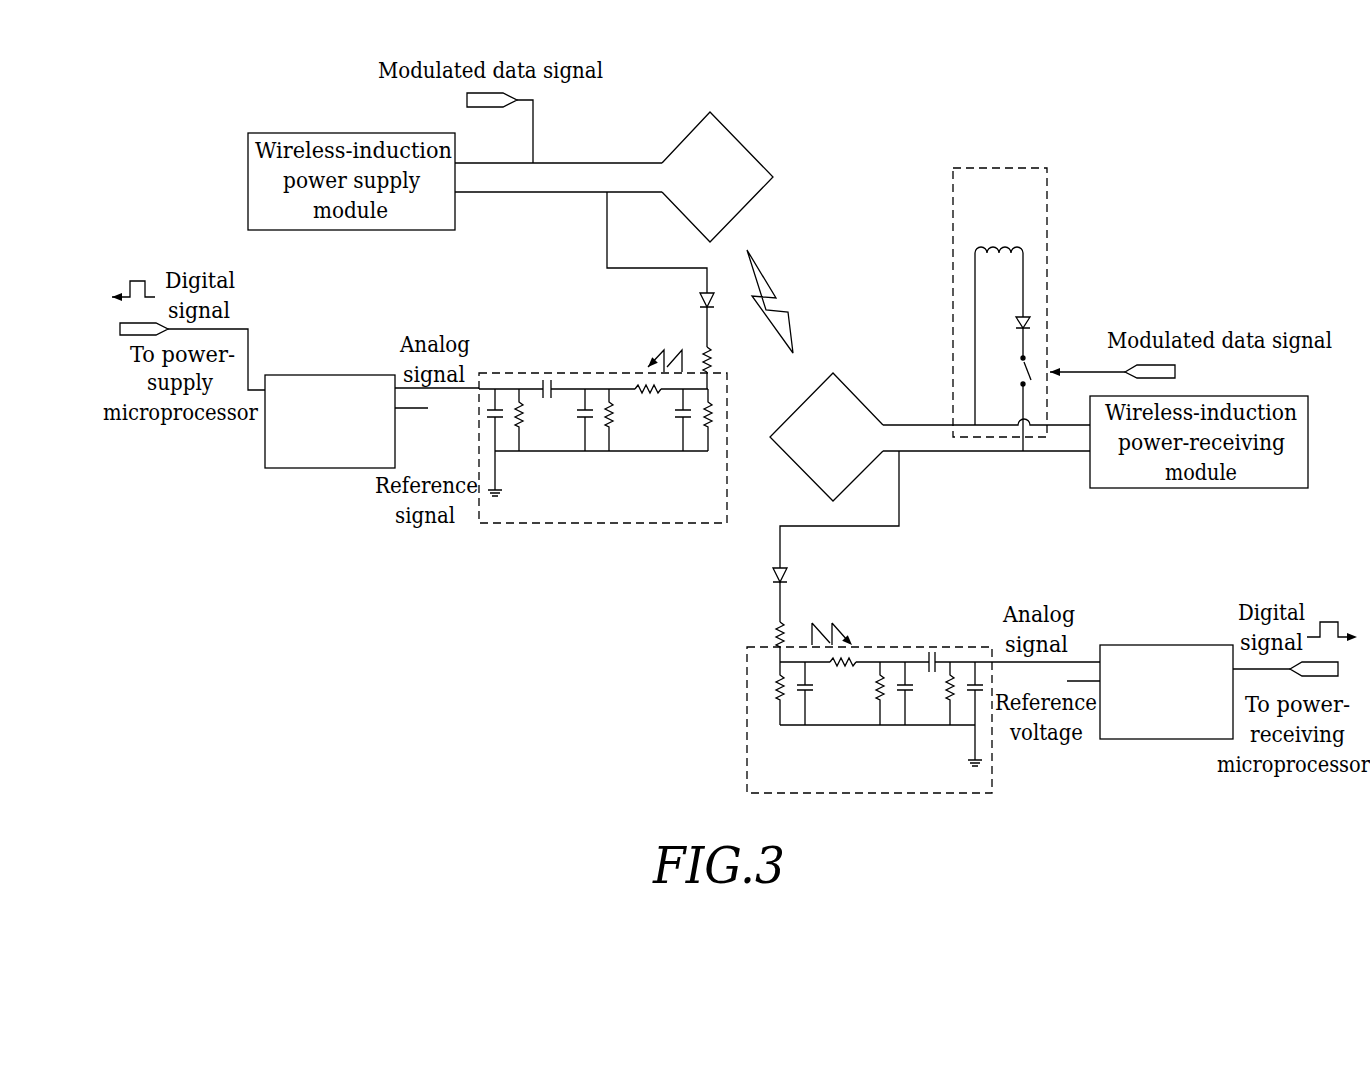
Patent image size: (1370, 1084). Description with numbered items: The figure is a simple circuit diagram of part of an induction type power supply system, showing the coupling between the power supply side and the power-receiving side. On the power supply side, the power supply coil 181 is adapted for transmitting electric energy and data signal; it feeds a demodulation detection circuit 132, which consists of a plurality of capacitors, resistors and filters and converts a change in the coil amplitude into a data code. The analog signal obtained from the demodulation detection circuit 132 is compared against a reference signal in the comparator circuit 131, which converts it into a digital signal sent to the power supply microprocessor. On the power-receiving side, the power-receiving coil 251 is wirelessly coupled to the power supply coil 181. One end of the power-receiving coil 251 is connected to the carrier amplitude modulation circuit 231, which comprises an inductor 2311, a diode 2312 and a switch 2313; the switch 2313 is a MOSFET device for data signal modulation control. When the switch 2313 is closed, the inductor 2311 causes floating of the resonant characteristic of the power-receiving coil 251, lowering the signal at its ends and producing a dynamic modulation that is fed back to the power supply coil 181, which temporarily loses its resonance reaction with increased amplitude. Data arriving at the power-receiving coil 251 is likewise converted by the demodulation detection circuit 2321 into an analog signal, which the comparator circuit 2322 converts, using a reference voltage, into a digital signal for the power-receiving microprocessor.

The power supply coil 181 is at (748, 130).
The comparator circuit 131 is at (332, 468).
The demodulation detection circuit 132 is at (596, 523).
The power-receiving coil 251 is at (856, 382).
The carrier amplitude modulation circuit 231 is at (1042, 283).
The inductor 2311 is at (998, 243).
The diode 2312 is at (1040, 308).
The switch 2313 is at (1040, 355).
The demodulation detection circuit 2321 is at (862, 793).
The comparator circuit 2322 is at (1117, 739).